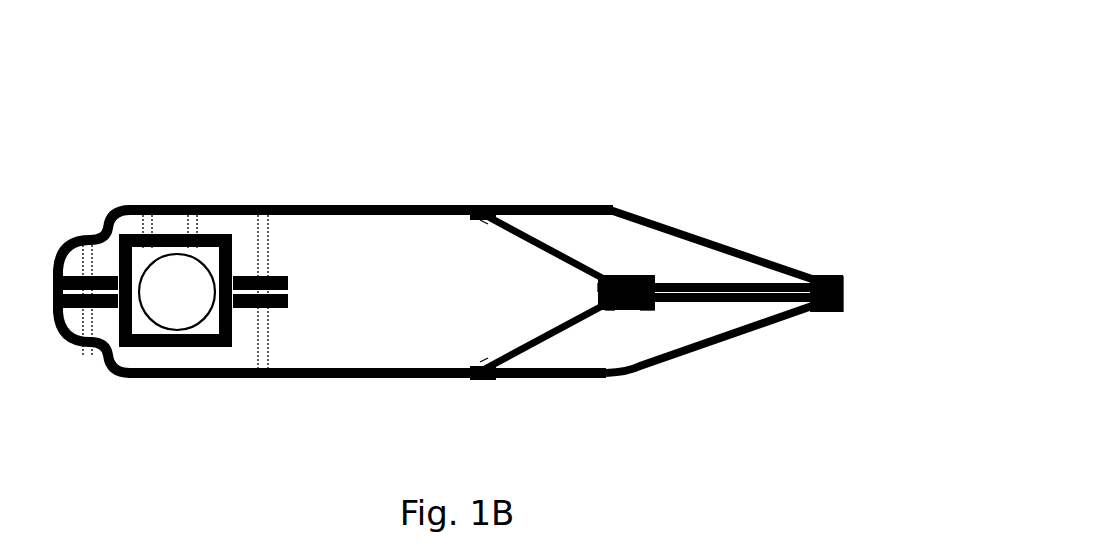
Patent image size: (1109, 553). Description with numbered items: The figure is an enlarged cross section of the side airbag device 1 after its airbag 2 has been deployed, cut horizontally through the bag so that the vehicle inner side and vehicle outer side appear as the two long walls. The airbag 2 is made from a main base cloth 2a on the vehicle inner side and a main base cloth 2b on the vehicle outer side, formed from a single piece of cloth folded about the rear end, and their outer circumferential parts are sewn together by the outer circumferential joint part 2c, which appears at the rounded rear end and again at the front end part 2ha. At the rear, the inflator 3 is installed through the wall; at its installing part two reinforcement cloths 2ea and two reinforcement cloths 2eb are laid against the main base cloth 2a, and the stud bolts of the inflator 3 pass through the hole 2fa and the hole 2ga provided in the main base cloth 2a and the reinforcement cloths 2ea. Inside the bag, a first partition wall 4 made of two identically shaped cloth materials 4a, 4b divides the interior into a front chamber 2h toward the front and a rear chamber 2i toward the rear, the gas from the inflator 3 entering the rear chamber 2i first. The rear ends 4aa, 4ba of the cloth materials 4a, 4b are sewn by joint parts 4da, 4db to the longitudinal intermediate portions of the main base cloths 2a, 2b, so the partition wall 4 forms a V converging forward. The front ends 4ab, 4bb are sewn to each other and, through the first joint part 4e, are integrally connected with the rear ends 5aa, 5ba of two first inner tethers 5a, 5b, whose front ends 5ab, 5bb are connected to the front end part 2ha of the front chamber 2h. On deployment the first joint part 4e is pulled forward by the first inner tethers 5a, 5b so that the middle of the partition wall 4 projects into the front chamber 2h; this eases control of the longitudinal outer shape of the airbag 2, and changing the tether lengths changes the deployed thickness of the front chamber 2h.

The side airbag device 1 is at (712, 130).
The airbag 2 is at (427, 180).
The main base cloth 2a is at (304, 204).
The main base cloth 2b is at (280, 378).
The outer circumferential joint part 2c is at (85, 360).
The front chamber 2h is at (703, 243).
The front end part 2ha is at (848, 293).
The rear chamber 2i is at (413, 308).
The reinforcement cloths 2ea is at (287, 276).
The reinforcement cloths 2eb is at (288, 305).
The hole 2fa is at (150, 236).
The hole 2ga is at (172, 237).
The inflator 3 is at (175, 310).
The first partition wall 4 is at (512, 79).
The cloth material 4a is at (545, 235).
The cloth material 4b is at (545, 338).
The one end 4aa is at (480, 222).
The other end 4ab is at (640, 274).
The one end 4ba is at (480, 364).
The other end 4bb is at (656, 312).
The joint part 4da is at (484, 210).
The joint part 4db is at (480, 380).
The first joint part 4e is at (640, 275).
The first inner tether 5a is at (753, 259).
The first inner tether 5b is at (728, 305).
The one end 5aa is at (598, 300).
The other end 5ab is at (846, 283).
The one end 5ba is at (610, 312).
The other end 5bb is at (846, 304).